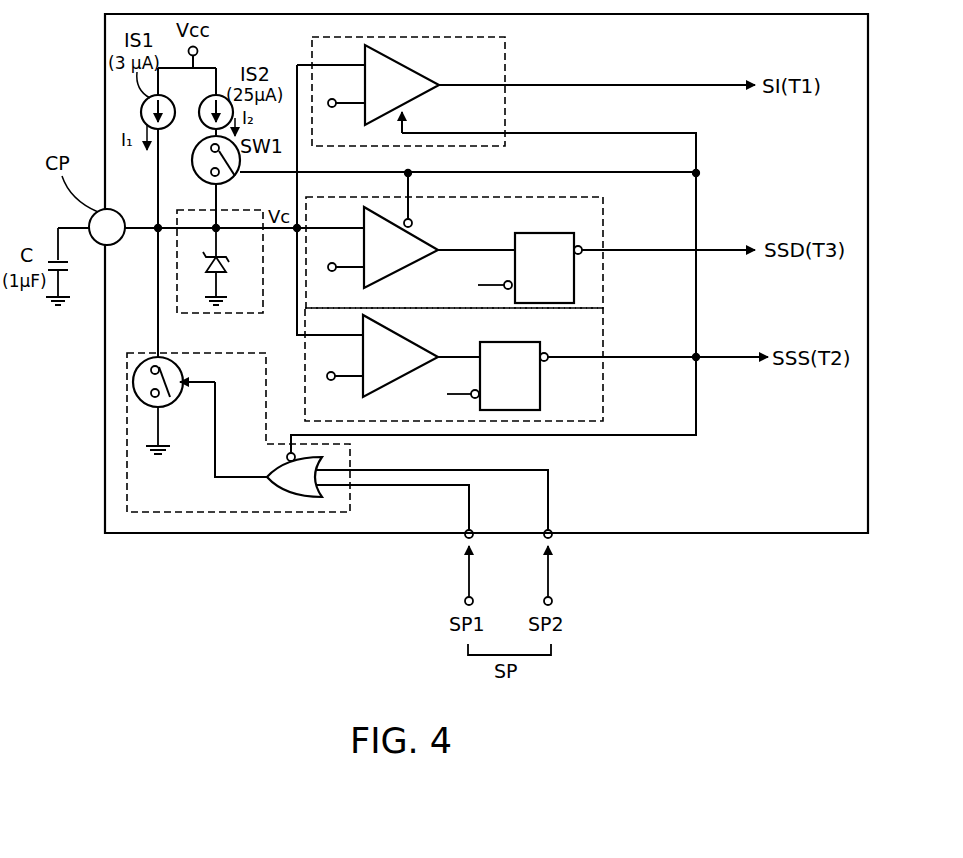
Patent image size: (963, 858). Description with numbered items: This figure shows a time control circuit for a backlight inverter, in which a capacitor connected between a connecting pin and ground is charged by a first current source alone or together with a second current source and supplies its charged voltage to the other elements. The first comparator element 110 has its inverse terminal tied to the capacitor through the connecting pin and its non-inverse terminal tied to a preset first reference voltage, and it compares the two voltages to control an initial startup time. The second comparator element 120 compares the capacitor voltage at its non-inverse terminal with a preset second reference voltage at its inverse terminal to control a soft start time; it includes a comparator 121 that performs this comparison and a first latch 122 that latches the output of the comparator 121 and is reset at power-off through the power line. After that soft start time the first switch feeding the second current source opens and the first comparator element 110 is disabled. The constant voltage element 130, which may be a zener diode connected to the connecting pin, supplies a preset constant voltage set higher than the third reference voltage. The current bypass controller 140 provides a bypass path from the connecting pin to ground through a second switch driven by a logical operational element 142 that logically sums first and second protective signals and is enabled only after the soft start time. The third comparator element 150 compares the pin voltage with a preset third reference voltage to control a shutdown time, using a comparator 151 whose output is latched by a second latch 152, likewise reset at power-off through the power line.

The first comparator element 110 is at (505, 75).
The second comparator element 120 is at (536, 364).
The comparator 121 is at (418, 344).
The first latch 122 is at (512, 342).
The constant voltage element 130 is at (215, 314).
The current bypass controller 140 is at (337, 441).
The logical operational element 142 is at (272, 483).
The third comparator element 150 is at (530, 242).
The comparator 151 is at (420, 233).
The second latch 152 is at (545, 233).